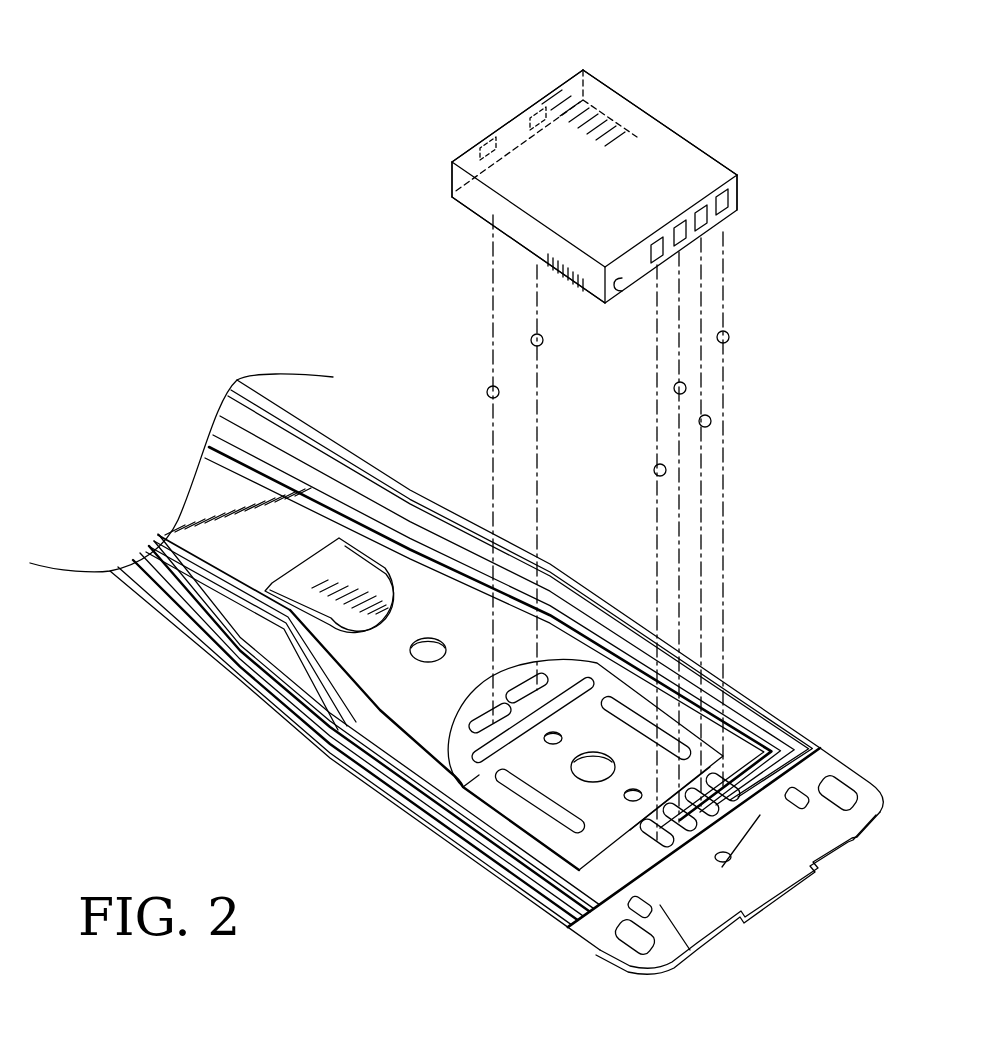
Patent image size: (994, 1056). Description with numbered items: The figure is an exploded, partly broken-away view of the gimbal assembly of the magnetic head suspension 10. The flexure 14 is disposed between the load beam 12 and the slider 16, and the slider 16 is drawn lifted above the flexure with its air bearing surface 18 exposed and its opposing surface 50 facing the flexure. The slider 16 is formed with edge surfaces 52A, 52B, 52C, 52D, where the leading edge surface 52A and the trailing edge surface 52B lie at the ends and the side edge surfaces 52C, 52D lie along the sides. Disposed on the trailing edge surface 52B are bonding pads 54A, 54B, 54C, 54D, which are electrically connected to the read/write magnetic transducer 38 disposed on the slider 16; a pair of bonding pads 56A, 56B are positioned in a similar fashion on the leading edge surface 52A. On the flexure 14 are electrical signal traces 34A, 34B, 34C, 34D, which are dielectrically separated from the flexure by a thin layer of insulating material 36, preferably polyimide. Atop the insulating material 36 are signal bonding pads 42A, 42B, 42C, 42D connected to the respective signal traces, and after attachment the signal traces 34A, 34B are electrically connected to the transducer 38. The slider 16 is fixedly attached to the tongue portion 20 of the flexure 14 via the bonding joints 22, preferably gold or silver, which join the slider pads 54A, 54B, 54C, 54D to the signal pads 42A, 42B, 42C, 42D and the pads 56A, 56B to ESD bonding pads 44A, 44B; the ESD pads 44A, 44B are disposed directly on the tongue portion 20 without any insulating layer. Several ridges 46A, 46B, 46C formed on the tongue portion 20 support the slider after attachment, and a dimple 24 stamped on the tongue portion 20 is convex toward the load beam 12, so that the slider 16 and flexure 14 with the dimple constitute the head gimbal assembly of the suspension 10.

The magnetic head suspension 10 is at (813, 163).
The load beam 12 is at (415, 737).
The flexure 14 is at (661, 967).
The slider 16 is at (590, 171).
The air bearing surface 18 is at (668, 150).
The tongue portion 20 is at (500, 810).
The bonding joints 22 is at (543, 340).
The dimple 24 is at (603, 760).
The electrical signal trace 34A is at (190, 590).
The electrical signal trace 34B is at (160, 548).
The electrical signal trace 34C is at (213, 403).
The electrical signal trace 34D is at (818, 746).
The insulating material 36 is at (258, 457).
The magnetic transducer 38 is at (620, 272).
The signal bonding pad 42A is at (680, 800).
The signal bonding pad 42B is at (697, 820).
The signal bonding pad 42C is at (735, 790).
The signal bonding pad 42D is at (797, 800).
The ESD bonding pad 44A is at (470, 710).
The ESD bonding pad 44B is at (540, 688).
The ridge 46A is at (475, 780).
The ridge 46B is at (545, 815).
The ridge 46C is at (620, 710).
The opposing surface 50 is at (455, 200).
The leading edge surface 52A is at (560, 80).
The trailing edge surface 52B is at (733, 202).
The side edge surface 52C is at (493, 207).
The side edge surface 52D is at (657, 110).
The bonding pad 54A is at (653, 240).
The bonding pad 54B is at (677, 227).
The bonding pad 54C is at (710, 223).
The bonding pad 54D is at (733, 210).
The bonding pad 56A is at (477, 143).
The bonding pad 56B is at (540, 112).